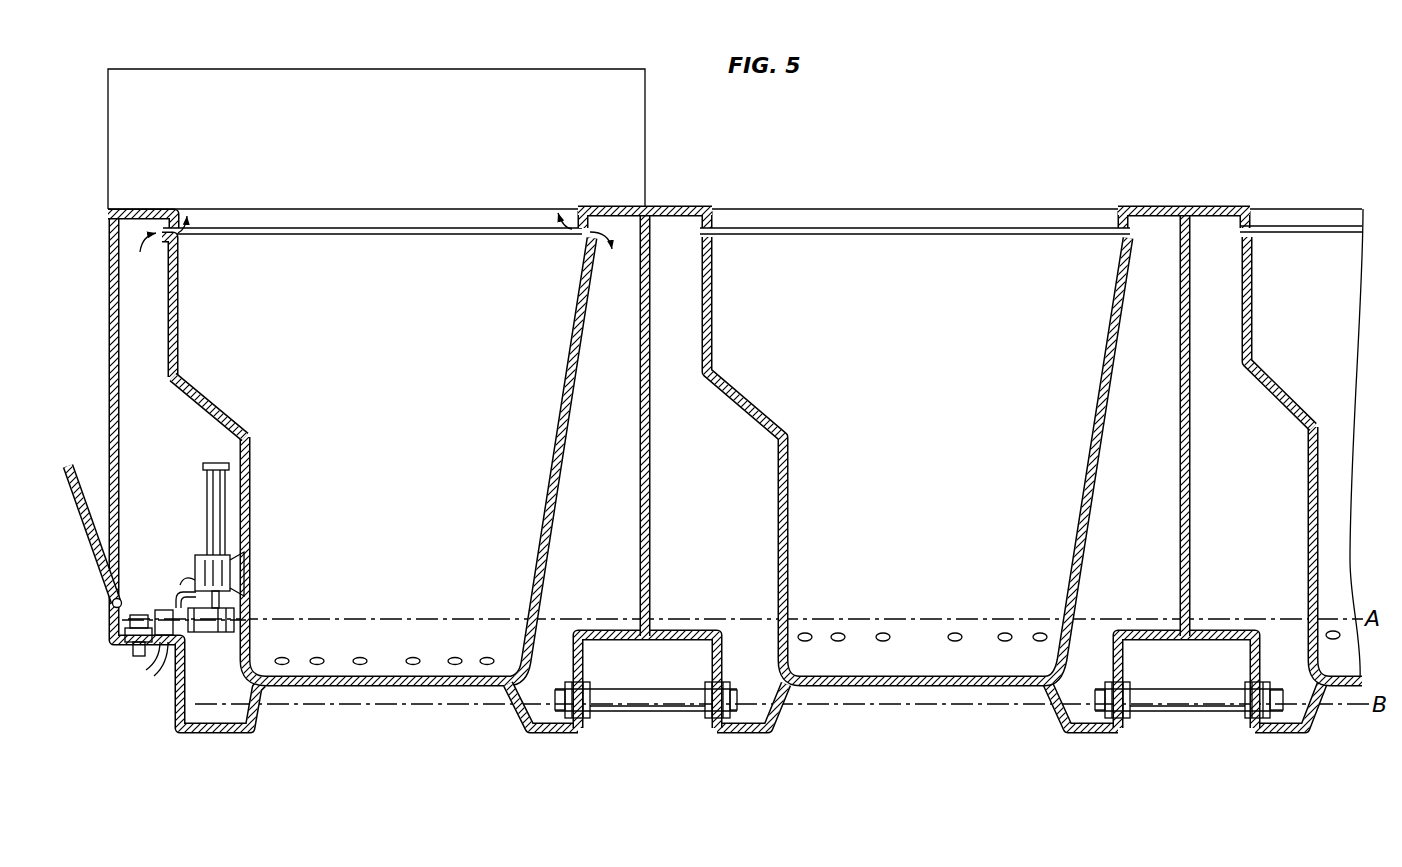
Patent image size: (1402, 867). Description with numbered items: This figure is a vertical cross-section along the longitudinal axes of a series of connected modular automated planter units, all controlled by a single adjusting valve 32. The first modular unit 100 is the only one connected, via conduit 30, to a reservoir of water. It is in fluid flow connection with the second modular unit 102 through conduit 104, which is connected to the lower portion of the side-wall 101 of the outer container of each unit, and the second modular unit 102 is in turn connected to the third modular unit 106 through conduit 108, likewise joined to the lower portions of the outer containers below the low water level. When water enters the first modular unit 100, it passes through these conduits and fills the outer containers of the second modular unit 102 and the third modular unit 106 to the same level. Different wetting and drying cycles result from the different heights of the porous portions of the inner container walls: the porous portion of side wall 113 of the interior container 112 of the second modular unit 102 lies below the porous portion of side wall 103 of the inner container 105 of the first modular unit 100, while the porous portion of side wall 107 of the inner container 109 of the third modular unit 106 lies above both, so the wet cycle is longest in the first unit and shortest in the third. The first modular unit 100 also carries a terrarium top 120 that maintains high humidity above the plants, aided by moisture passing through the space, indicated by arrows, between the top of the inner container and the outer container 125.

The terrarium top 120 is at (351, 68).
The outer container 125 is at (110, 300).
The first modular unit 100 is at (410, 200).
The inner container 105 is at (215, 411).
The side wall 103 is at (260, 657).
The side-wall 101 is at (584, 661).
The conduit 104 is at (645, 712).
The conduit 108 is at (1192, 712).
The interior container 112 is at (713, 300).
The second modular unit 102 is at (913, 205).
The side wall 113 is at (794, 633).
The third modular unit 106 is at (1324, 198).
The inner container 109 is at (1253, 343).
The side wall 107 is at (1312, 637).
The adjusting valve 32 is at (198, 473).
The conduit 30 is at (152, 678).